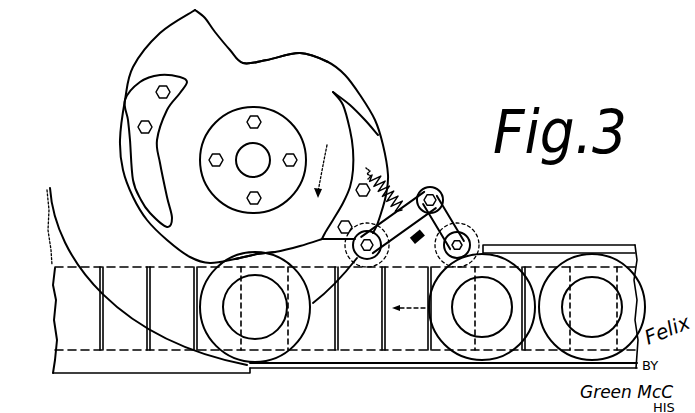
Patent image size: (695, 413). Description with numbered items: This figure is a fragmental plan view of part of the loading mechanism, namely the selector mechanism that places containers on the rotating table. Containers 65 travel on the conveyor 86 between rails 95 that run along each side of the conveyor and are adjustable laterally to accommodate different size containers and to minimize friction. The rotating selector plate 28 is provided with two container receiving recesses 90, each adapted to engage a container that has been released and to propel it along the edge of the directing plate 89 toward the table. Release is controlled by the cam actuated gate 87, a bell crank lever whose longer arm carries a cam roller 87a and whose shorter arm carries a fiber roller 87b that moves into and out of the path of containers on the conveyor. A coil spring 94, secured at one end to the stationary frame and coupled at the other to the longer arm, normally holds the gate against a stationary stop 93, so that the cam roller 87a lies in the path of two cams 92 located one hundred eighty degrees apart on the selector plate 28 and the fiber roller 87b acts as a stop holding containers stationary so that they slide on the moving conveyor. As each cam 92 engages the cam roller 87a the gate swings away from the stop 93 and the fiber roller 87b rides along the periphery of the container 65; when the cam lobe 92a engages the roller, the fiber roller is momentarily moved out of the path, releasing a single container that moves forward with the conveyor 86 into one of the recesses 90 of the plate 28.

The selector plate 28 is at (328, 62).
The container 65 is at (460, 338).
The conveyor 86 is at (366, 342).
The cam actuated gate 87 is at (447, 220).
The cam roller 87a is at (367, 260).
The fiber roller 87b is at (474, 246).
The directing plate 89 is at (65, 243).
The container receiving recess 90 is at (243, 62).
The cam 92 is at (363, 137).
The cam lobe 92a is at (125, 100).
The stationary stop 93 is at (433, 212).
The coil spring 94 is at (377, 232).
The rail 95 is at (580, 253).